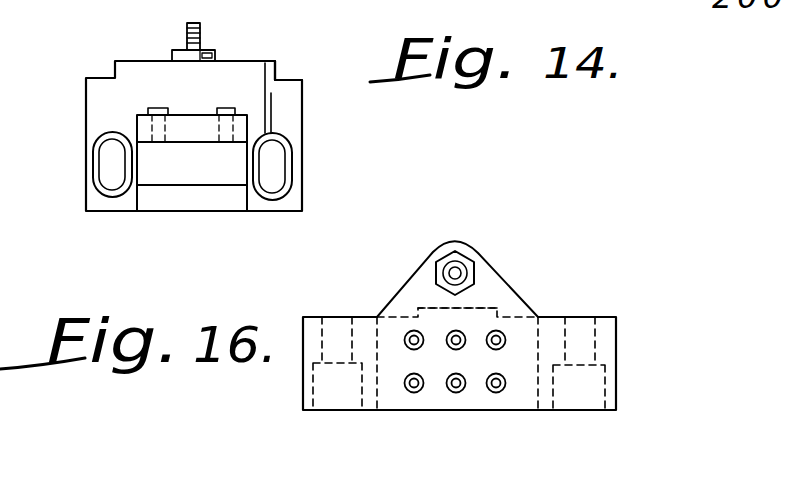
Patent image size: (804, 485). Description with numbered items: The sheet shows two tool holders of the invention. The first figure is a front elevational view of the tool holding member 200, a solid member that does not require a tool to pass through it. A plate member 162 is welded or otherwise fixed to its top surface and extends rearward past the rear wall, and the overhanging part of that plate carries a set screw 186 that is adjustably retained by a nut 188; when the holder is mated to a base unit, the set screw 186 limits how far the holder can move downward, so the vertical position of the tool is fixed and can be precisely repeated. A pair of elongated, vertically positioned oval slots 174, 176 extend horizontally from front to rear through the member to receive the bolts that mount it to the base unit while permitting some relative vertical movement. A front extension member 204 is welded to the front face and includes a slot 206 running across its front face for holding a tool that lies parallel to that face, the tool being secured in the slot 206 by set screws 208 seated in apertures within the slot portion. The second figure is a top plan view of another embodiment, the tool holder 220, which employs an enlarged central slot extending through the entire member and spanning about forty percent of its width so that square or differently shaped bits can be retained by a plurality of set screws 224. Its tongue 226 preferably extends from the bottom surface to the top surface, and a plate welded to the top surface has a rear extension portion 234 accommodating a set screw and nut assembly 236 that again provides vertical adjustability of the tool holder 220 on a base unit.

In FIG. 14, the tool holding member 200 is at (71, 76).
In FIG. 14, the plate member 162 is at (275, 68).
In FIG. 14, the set screw 186 is at (212, 32).
In FIG. 14, the nut 188 is at (217, 50).
In FIG. 14, the front extension member 204 is at (200, 117).
In FIG. 14, the set screws 208 is at (166, 108).
In FIG. 14, the slot 174 is at (108, 180).
In FIG. 14, the slot 176 is at (267, 187).
In FIG. 14, the slot 206 is at (175, 181).
In FIG. 16, the tool holder 220 is at (680, 334).
In FIG. 16, the rear extension portion 234 is at (490, 273).
In FIG. 16, the tongue 226 is at (497, 308).
In FIG. 16, the set screw and nut assembly 236 is at (470, 252).
In FIG. 16, the set screws 224 is at (496, 393).